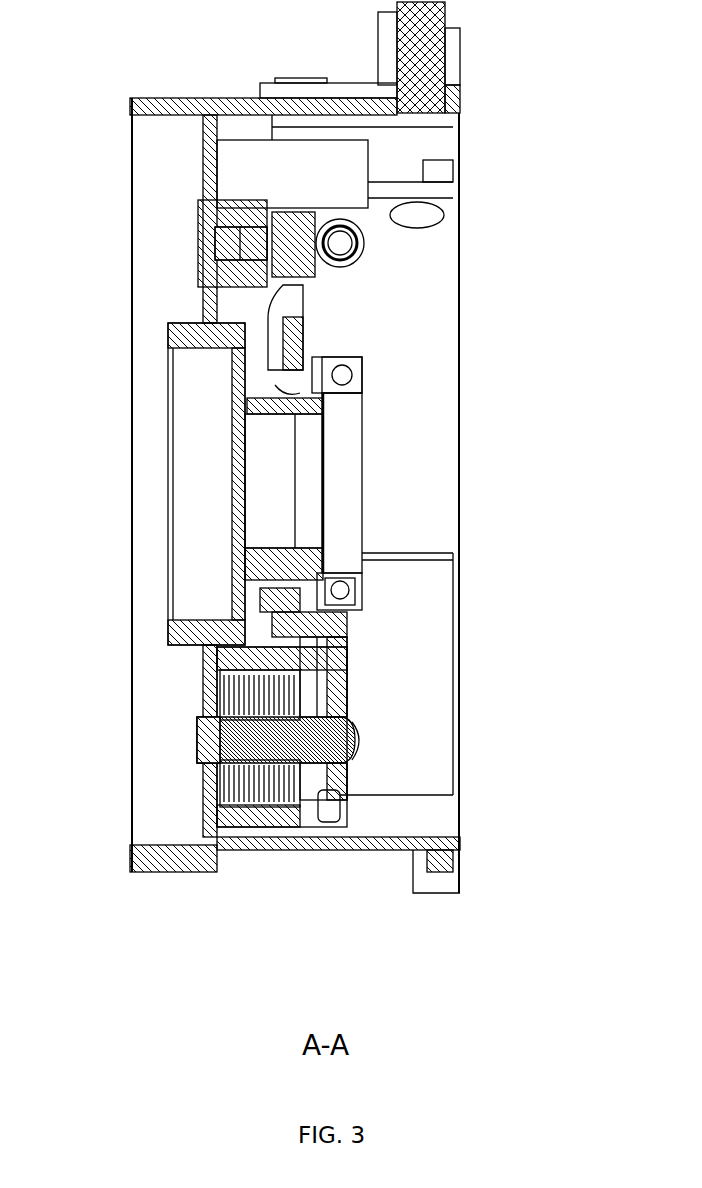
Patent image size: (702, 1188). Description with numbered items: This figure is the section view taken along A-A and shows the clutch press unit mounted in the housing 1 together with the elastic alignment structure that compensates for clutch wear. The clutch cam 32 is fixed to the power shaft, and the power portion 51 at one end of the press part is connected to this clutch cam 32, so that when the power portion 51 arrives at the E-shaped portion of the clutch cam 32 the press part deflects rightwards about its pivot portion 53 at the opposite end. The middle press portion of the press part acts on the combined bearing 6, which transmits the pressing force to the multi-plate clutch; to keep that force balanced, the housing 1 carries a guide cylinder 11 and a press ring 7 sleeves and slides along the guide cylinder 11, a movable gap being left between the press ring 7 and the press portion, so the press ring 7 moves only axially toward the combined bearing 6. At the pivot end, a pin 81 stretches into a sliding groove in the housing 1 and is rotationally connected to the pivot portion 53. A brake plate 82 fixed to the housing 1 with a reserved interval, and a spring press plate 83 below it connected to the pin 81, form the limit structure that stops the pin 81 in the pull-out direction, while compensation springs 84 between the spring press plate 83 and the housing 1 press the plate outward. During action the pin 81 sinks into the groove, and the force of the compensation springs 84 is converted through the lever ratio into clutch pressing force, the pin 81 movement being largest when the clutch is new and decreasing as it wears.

The housing 1 is at (153, 238).
The guide cylinder 11 is at (260, 500).
The clutch cam 32 is at (317, 265).
The power portion 51 is at (310, 295).
The combined bearing 6 is at (348, 462).
The press ring 7 is at (333, 587).
The pivot portion 53 is at (360, 723).
The pin 81 is at (338, 773).
The brake plate 82 is at (322, 773).
The spring press plate 83 is at (287, 820).
The compensation springs 84 is at (220, 810).